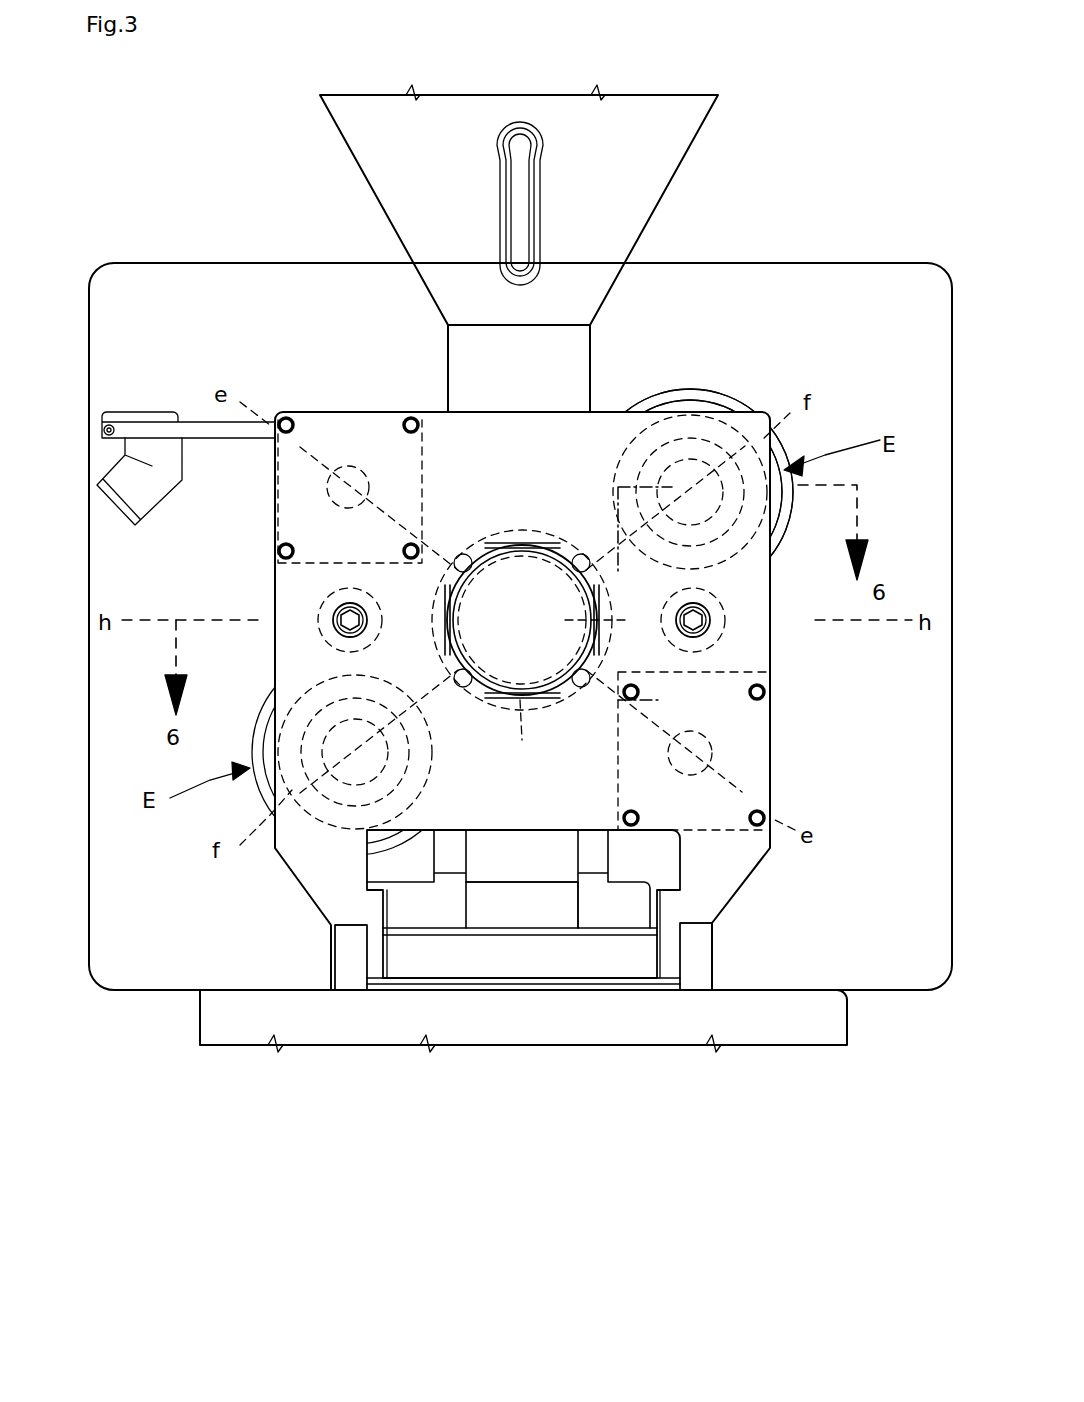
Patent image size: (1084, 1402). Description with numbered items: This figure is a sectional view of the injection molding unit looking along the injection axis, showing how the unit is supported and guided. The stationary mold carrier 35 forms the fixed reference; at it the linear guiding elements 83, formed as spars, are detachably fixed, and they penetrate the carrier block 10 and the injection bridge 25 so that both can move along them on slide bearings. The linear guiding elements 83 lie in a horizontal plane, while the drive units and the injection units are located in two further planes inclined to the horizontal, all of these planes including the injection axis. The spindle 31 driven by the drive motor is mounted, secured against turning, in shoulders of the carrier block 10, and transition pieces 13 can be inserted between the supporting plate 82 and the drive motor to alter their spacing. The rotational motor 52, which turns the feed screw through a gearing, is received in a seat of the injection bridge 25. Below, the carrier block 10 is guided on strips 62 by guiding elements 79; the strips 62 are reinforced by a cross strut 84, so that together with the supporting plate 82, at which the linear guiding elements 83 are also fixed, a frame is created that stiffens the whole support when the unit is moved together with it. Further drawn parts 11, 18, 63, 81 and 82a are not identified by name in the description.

The stationary mold carrier 35 is at (172, 305).
The transition pieces 13 is at (345, 465).
The spindle 31 is at (370, 430).
The roller 18 is at (660, 378).
The injection bridge 25 is at (695, 388).
The roller shell 11 is at (706, 437).
The roller flange 63 is at (738, 425).
The linear guiding elements 83 is at (325, 605).
The rotational motor 52 is at (524, 634).
The guide top 82a is at (517, 700).
The supporting plate 82 is at (347, 895).
The carrier block 10 is at (453, 848).
The cross strut 84 is at (520, 953).
The guiding elements 79 is at (603, 905).
The strips 62 is at (700, 957).
The base plate 81 is at (817, 1028).